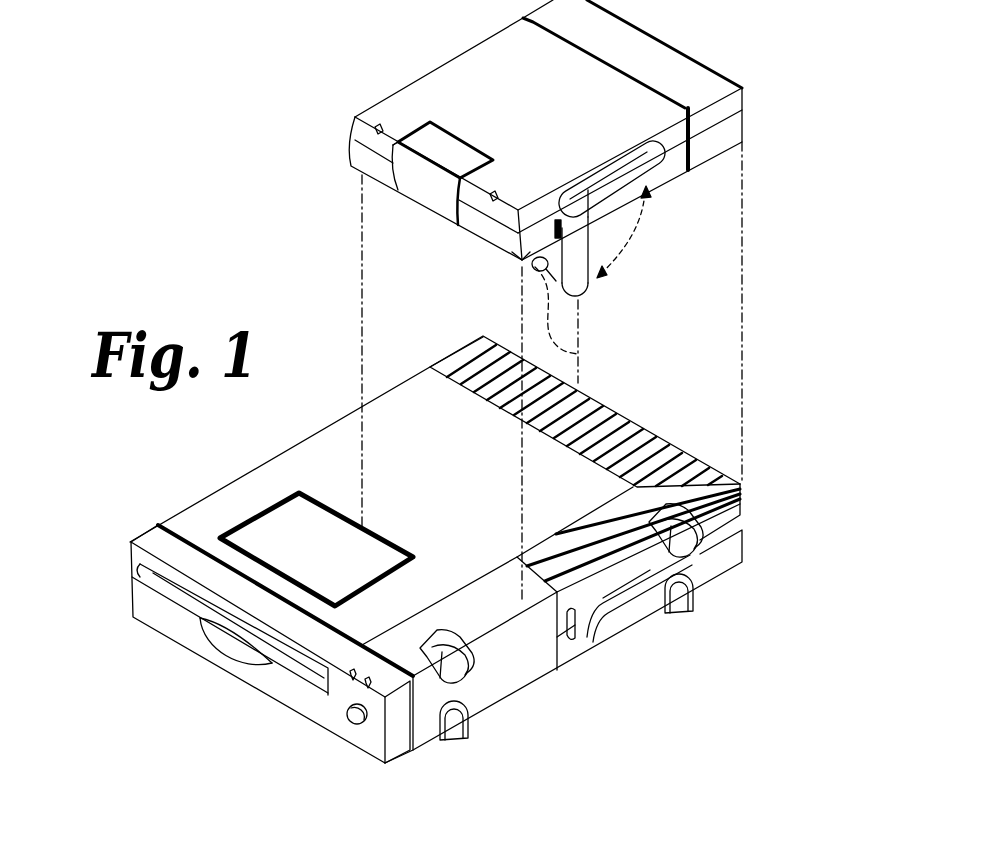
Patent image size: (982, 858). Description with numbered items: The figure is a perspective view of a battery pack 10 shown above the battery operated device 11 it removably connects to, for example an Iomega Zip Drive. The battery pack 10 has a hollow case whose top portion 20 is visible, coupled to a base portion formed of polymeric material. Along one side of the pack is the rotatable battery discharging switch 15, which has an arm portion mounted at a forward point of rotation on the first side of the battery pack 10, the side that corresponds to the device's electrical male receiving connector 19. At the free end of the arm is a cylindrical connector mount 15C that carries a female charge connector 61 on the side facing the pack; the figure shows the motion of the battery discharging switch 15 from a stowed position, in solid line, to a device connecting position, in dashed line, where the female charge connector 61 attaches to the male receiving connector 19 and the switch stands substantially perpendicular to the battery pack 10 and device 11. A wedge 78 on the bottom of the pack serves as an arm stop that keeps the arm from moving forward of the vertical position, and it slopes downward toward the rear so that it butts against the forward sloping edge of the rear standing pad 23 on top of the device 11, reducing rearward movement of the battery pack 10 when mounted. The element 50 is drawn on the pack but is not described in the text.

The battery pack 10 is at (335, 87).
The device 11 is at (147, 461).
The battery discharging switch 15 is at (647, 160).
The connector mount 15C is at (580, 357).
The male receiving connector 19 is at (580, 645).
The top portion 20 is at (551, 103).
The rear standing pad 23 is at (740, 512).
The shutter 50 is at (435, 197).
The female charge connector 61 is at (533, 278).
The wedge 78 is at (515, 258).